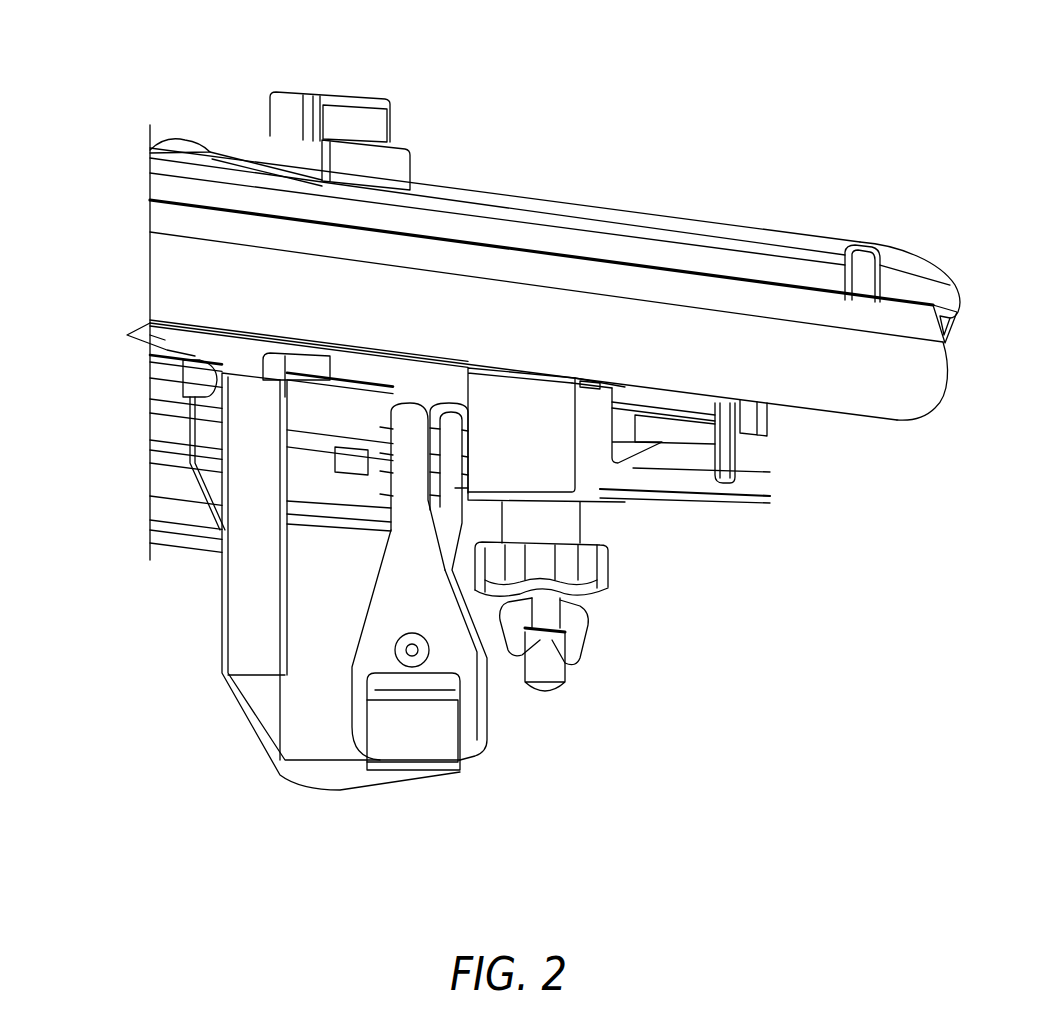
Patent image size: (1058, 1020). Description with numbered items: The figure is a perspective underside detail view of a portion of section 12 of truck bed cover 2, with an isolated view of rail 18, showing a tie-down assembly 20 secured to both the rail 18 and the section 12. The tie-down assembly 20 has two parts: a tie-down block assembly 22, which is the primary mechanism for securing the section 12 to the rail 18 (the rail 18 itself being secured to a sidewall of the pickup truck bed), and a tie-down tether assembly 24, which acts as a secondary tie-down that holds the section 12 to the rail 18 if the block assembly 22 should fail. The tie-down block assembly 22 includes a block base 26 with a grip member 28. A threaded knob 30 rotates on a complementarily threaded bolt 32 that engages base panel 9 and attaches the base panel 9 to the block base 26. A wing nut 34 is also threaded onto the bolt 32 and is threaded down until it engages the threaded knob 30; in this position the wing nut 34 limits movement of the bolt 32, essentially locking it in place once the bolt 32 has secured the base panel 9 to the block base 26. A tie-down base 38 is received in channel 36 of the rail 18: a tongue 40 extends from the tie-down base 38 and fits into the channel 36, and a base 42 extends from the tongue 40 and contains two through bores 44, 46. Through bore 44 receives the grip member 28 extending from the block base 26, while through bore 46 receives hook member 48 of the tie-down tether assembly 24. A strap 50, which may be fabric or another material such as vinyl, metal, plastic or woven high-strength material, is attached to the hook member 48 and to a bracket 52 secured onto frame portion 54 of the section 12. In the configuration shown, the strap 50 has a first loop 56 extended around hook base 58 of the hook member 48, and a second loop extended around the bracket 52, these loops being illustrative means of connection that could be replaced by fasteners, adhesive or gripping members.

The truck bed cover 2 is at (673, 113).
The base panel 9 is at (870, 216).
The section 12 is at (115, 364).
The rail 18 is at (702, 492).
The tie-down assembly 20 is at (643, 743).
The tie-down block assembly 22 is at (655, 556).
The tie-down tether assembly 24 is at (289, 818).
The block base 26 is at (552, 465).
The grip member 28 is at (633, 468).
The threaded knob 30 is at (614, 590).
The bolt 32 is at (545, 705).
The wing nut 34 is at (513, 655).
The channel 36 is at (150, 498).
The tie-down base 38 is at (636, 412).
The tongue 40 is at (715, 428).
The base 42 is at (367, 453).
The through bore 44 is at (687, 443).
The through bore 46 is at (447, 467).
The hook member 48 is at (408, 457).
The strap 50 is at (243, 643).
The bracket 52 is at (195, 383).
The frame portion 54 is at (217, 348).
The first loop 56 is at (417, 748).
The hook base 58 is at (195, 437).